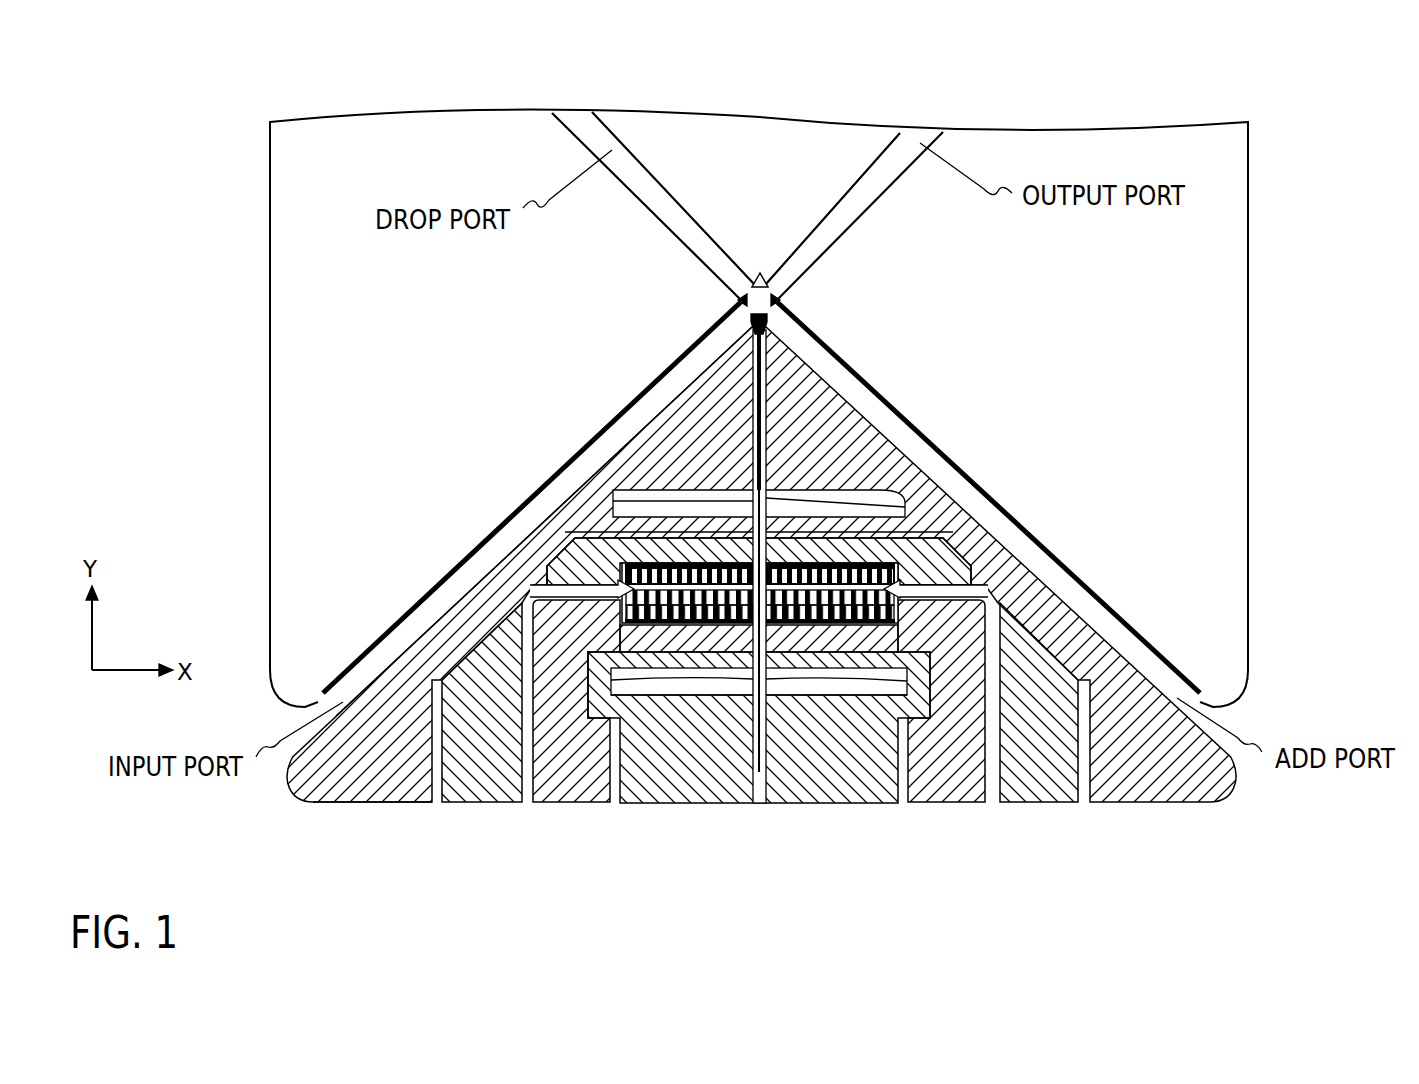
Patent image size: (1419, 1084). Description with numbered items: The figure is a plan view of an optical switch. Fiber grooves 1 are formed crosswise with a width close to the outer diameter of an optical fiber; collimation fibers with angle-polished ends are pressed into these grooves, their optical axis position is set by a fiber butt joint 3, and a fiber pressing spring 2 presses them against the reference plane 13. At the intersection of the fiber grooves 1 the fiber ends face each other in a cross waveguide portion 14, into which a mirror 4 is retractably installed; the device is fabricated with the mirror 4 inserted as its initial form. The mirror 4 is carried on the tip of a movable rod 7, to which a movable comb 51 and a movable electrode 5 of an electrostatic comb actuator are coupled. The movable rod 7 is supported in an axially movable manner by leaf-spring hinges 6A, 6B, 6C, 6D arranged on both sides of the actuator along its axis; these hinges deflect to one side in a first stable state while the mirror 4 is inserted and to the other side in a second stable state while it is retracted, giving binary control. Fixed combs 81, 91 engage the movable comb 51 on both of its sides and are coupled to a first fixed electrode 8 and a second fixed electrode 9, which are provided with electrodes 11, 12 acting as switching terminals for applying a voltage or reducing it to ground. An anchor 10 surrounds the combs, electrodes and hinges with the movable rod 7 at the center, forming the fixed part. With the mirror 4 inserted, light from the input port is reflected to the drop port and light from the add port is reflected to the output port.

The fiber grooves 1 is at (835, 372).
The fiber pressing spring 2 is at (632, 407).
The fiber butt joint 3 is at (740, 299).
The mirror 4 is at (770, 290).
The movable electrode 5 is at (620, 585).
The movable comb 51 is at (598, 592).
The leaf-spring hinge 6A is at (650, 495).
The leaf-spring hinge 6B is at (855, 495).
The leaf-spring hinge 6C is at (673, 681).
The leaf-spring hinge 6D is at (830, 681).
The movable rod 7 is at (753, 488).
The first fixed electrode 8 is at (945, 592).
The fixed comb 81 is at (935, 553).
The second fixed electrode 9 is at (965, 552).
The fixed comb 91 is at (925, 548).
The anchor 10 is at (374, 803).
The electrode 11 is at (573, 803).
The electrode 12 is at (488, 803).
The reference plane 13 is at (390, 668).
The cross waveguide portion 14 is at (748, 292).